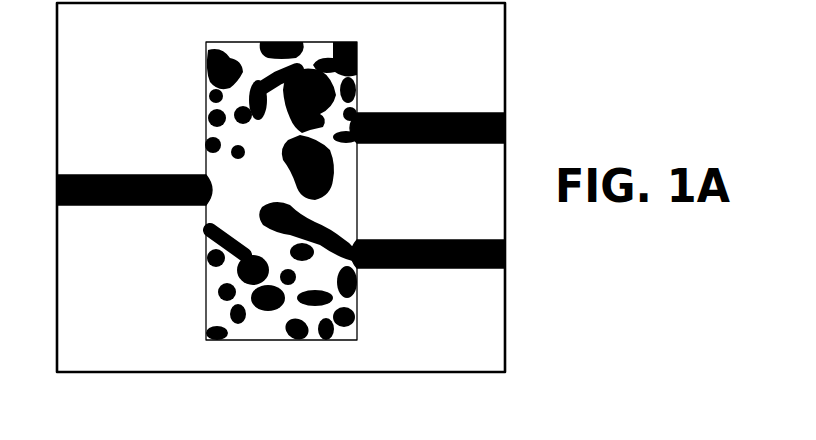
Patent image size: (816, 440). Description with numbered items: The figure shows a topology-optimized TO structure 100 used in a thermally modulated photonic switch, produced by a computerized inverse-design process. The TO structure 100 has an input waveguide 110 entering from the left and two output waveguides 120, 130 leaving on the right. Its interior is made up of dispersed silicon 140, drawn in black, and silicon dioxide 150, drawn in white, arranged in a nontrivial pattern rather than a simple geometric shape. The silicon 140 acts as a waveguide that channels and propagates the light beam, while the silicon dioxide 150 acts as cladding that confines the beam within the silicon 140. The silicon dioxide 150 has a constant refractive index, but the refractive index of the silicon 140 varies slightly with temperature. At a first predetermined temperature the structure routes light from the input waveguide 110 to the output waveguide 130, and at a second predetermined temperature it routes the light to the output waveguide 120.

The TO structure 100 is at (507, 90).
The input waveguide 110 is at (122, 175).
The output waveguide 120 is at (377, 111).
The output waveguide 130 is at (450, 270).
The silicon 140 is at (333, 170).
The silicon dioxide 150 is at (228, 216).